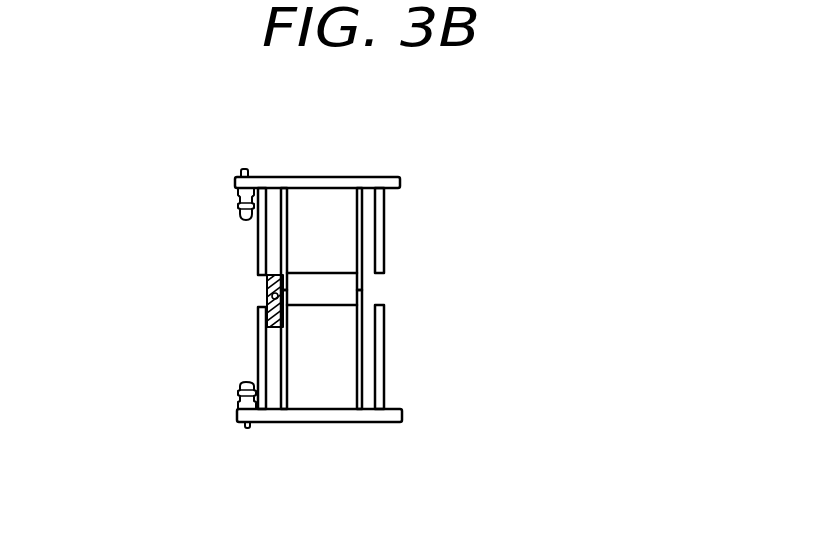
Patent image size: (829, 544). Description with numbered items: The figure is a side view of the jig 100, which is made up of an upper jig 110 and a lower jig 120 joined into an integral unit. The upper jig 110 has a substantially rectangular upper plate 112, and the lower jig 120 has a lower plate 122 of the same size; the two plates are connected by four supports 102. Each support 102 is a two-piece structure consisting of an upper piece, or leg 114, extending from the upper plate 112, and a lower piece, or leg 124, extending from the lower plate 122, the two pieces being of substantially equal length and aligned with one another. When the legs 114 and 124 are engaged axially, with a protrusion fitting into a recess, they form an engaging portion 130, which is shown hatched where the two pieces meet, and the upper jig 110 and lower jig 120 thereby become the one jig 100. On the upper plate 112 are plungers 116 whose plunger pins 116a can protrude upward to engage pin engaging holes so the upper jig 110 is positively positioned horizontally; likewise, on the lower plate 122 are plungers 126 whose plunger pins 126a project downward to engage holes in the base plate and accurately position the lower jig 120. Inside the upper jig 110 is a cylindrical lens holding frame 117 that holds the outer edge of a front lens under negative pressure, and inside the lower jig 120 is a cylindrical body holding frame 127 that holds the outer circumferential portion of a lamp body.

The jig 100 is at (590, 435).
The support 102 is at (488, 375).
The upper jig 110 is at (386, 208).
The upper plate 112 is at (350, 177).
The upper piece (leg) 114 is at (273, 250).
The plunger 116 is at (238, 220).
The plunger pin 116a is at (244, 172).
The lens holding frame 117 is at (302, 200).
The lower jig 120 is at (386, 381).
The lower plate 122 is at (368, 422).
The lower piece (leg) 124 is at (275, 350).
The plunger 126 is at (238, 383).
The plunger pin 126a is at (247, 429).
The body holding frame 127 is at (308, 388).
The engaging portion 130 is at (287, 294).